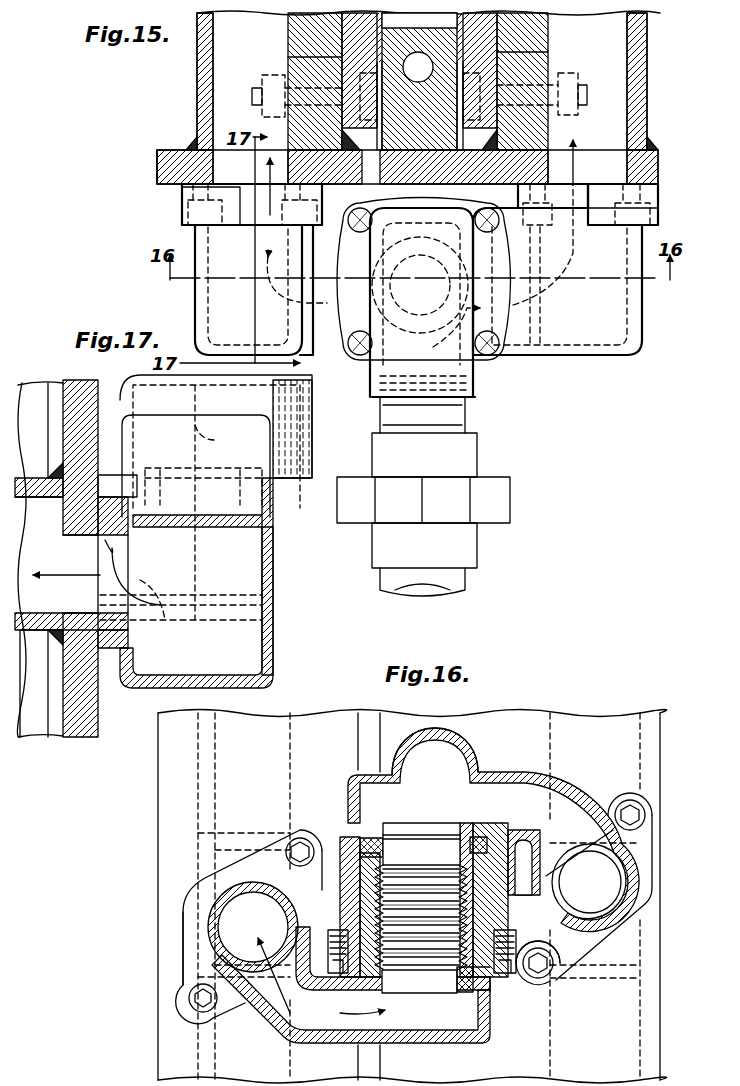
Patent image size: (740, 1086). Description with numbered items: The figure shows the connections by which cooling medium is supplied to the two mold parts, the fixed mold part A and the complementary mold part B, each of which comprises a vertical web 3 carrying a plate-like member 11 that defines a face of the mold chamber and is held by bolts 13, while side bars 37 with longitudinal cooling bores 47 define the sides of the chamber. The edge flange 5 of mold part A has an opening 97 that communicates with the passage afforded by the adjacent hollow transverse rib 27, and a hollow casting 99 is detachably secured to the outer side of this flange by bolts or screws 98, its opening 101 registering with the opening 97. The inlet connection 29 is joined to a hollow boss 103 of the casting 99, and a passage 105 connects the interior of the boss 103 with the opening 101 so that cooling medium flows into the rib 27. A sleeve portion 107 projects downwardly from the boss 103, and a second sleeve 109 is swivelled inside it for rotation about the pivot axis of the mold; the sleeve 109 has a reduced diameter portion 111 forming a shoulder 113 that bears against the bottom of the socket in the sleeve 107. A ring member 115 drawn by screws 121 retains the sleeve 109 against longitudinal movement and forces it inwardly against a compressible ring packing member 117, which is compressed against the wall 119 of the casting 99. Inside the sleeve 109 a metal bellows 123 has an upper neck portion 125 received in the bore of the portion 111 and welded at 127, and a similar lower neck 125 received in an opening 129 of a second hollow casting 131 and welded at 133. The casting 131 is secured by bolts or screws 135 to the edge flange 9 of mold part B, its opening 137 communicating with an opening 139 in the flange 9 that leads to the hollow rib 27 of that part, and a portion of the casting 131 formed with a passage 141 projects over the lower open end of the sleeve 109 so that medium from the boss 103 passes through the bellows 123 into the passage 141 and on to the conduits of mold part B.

In FIG. 15, the web 3 is at (300, 32).
In FIG. 15, the edge flange 5 is at (658, 161).
In FIG. 16, the edge flange 5 is at (660, 757).
In FIG. 15, the edge flange 9 is at (157, 166).
In FIG. 17, the edge flange 9 is at (63, 408).
In FIG. 16, the edge flange 9 is at (158, 781).
In FIG. 15, the plate-like member 11 is at (300, 57).
In FIG. 15, the bolt 13 is at (255, 90).
In FIG. 15, the transverse rib 27 is at (197, 50).
In FIG. 17, the transverse rib 27 is at (56, 472).
In FIG. 16, the transverse rib 27 is at (229, 848).
In FIG. 15, the inlet connection 29 is at (465, 584).
In FIG. 15, the side bar 37 is at (410, 125).
In FIG. 15, the longitudinal bore 47 is at (415, 52).
In FIG. 15, the opening 97 is at (627, 163).
In FIG. 15, the bolt or screw 98 is at (182, 220).
In FIG. 16, the bolt or screw 98 is at (637, 815).
In FIG. 15, the hollow casting 99 is at (658, 202).
In FIG. 16, the hollow casting 99 is at (583, 875).
In FIG. 15, the opening 101 is at (656, 214).
In FIG. 16, the opening 101 is at (597, 872).
In FIG. 15, the hollow boss 103 is at (470, 380).
In FIG. 17, the hollow boss 103 is at (312, 408).
In FIG. 16, the hollow boss 103 is at (456, 746).
In FIG. 16, the passage 105 is at (510, 787).
In FIG. 15, the sleeve portion 107 is at (340, 268).
In FIG. 16, the sleeve portion 107 is at (340, 848).
In FIG. 16, the second sleeve 109 is at (516, 931).
In FIG. 17, the reduced diameter portion 111 is at (268, 492).
In FIG. 16, the reduced diameter portion 111 is at (385, 843).
In FIG. 16, the shoulder 113 is at (363, 825).
In FIG. 16, the ring member 115 is at (489, 979).
In FIG. 16, the ring packing member 117 is at (463, 832).
In FIG. 16, the wall 119 is at (504, 828).
In FIG. 15, the screw 121 is at (482, 211).
In FIG. 16, the screw 121 is at (517, 953).
In FIG. 16, the metal bellows 123 is at (342, 897).
In FIG. 16, the neck portion 125 is at (460, 853).
In FIG. 16, the weld 127 is at (388, 830).
In FIG. 16, the opening 129 is at (316, 992).
In FIG. 15, the second hollow casting 131 is at (195, 298).
In FIG. 16, the second hollow casting 131 is at (206, 886).
In FIG. 16, the weld 133 is at (460, 995).
In FIG. 16, the bolt or screw 135 is at (287, 842).
In FIG. 15, the opening 137 is at (180, 202).
In FIG. 17, the opening 137 is at (112, 535).
In FIG. 16, the opening 137 is at (258, 892).
In FIG. 15, the opening 139 is at (213, 180).
In FIG. 17, the opening 139 is at (78, 535).
In FIG. 17, the passage 141 is at (247, 650).
In FIG. 16, the passage 141 is at (327, 1030).
In FIG. 15, the fixed mold part A is at (647, 80).
In FIG. 16, the fixed mold part A is at (571, 720).
In FIG. 15, the complementary mold part B is at (197, 76).
In FIG. 16, the complementary mold part B is at (317, 720).